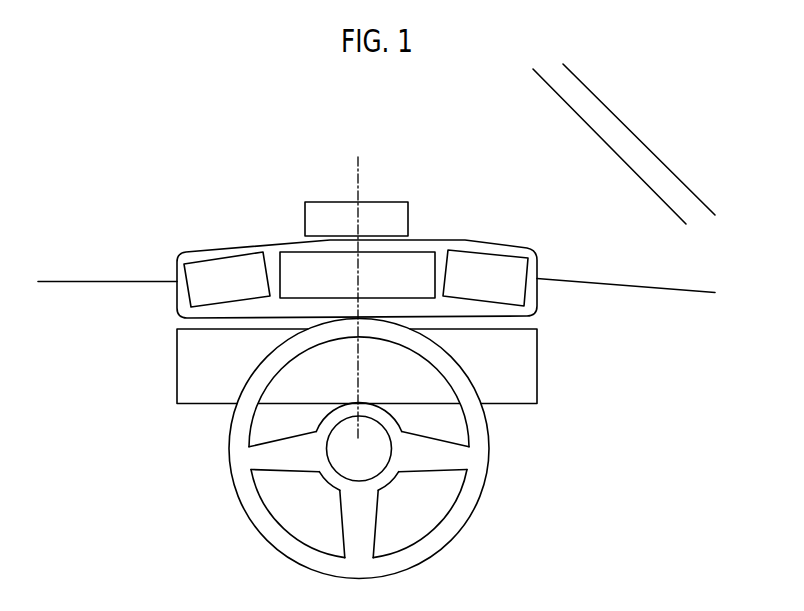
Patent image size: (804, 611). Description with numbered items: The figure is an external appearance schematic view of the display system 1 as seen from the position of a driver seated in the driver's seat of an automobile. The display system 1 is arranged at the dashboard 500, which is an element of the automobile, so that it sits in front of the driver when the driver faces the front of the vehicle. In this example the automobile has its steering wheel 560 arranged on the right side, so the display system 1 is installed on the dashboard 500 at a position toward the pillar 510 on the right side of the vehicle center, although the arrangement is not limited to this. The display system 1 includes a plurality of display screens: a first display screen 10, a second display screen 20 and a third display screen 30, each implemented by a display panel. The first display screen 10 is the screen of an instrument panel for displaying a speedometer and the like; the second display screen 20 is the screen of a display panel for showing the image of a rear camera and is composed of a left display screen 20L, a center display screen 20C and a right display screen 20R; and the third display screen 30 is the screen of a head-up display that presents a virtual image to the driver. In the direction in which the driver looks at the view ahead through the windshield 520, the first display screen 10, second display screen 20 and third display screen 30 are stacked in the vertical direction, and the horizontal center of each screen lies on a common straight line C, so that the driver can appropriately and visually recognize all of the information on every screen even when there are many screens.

The display system 1 is at (317, 181).
The first display screen 10 is at (527, 378).
The second display screen 20 is at (272, 249).
The left display screen 20L is at (197, 272).
The center display screen 20C is at (296, 263).
The right display screen 20R is at (493, 263).
The third display screen 30 is at (400, 216).
The dashboard 500 is at (582, 308).
The pillar 510 is at (603, 123).
The windshield 520 is at (535, 125).
The steering wheel 560 is at (488, 466).
The straight line C is at (355, 284).